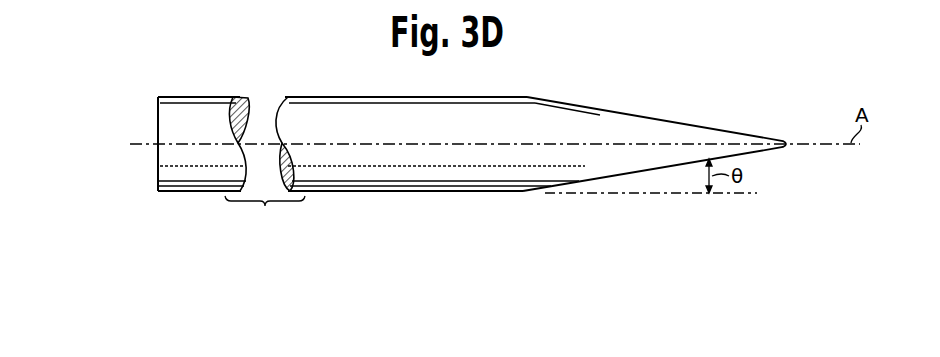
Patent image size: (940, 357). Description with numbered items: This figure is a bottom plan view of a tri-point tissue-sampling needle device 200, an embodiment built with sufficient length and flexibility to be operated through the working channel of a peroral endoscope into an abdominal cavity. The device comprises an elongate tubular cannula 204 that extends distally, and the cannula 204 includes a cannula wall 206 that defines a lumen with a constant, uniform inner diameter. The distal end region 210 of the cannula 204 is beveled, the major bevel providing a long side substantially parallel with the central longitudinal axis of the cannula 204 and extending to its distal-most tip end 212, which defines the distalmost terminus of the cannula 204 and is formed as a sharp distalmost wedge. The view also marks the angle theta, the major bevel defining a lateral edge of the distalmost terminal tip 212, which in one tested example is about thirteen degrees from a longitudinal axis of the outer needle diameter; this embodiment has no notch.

The tri-point tissue-sampling needle device 200 is at (162, 91).
The elongate tubular cannula 204 is at (190, 181).
The cannula wall 206 is at (207, 113).
The distal end region 210 is at (761, 160).
The distal-most tip end 212 is at (791, 139).